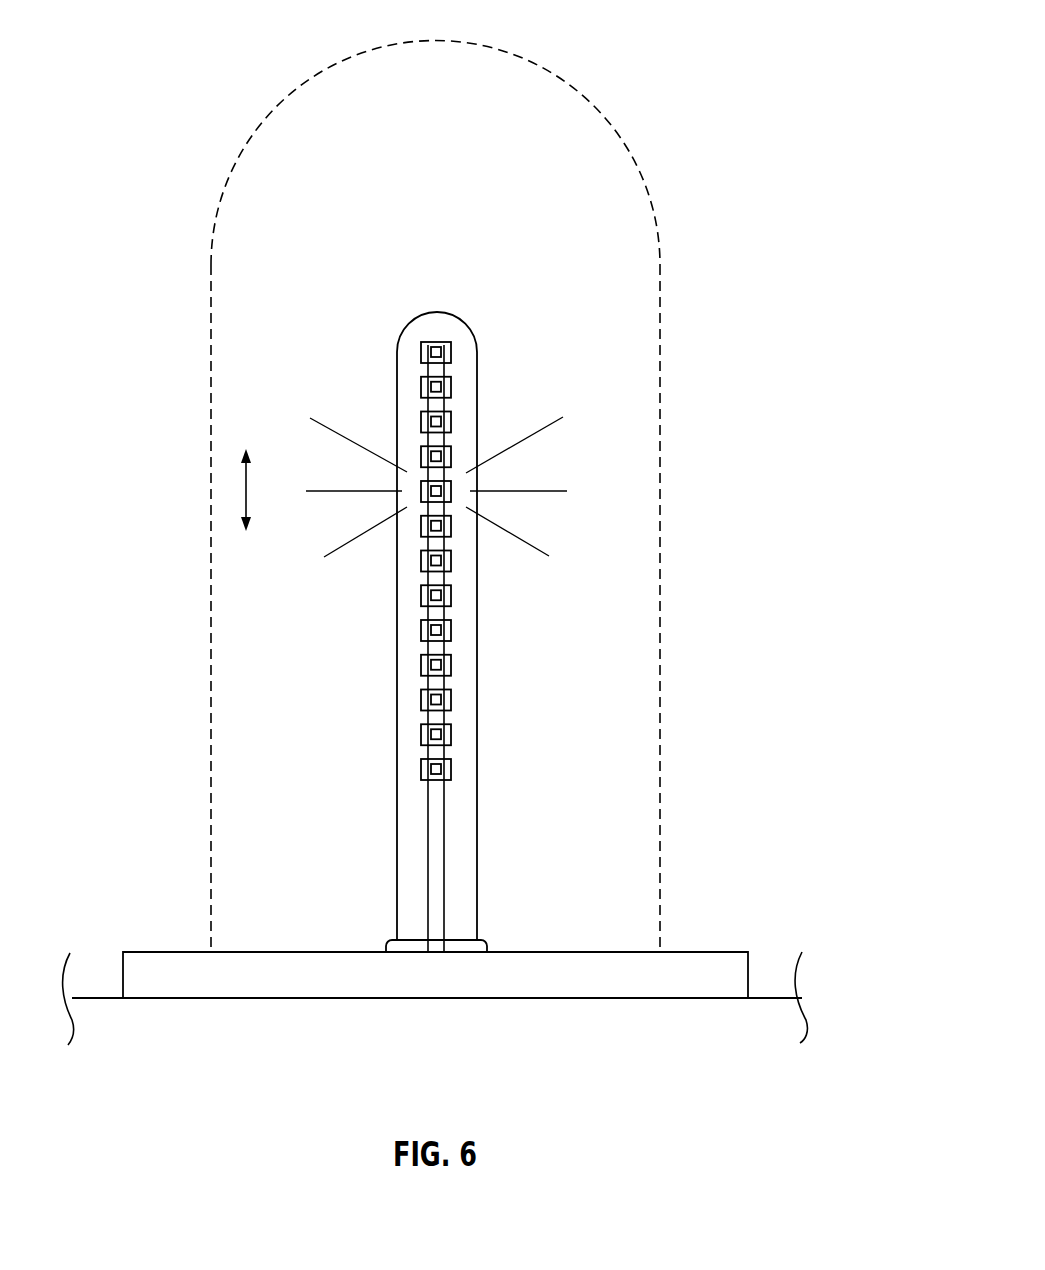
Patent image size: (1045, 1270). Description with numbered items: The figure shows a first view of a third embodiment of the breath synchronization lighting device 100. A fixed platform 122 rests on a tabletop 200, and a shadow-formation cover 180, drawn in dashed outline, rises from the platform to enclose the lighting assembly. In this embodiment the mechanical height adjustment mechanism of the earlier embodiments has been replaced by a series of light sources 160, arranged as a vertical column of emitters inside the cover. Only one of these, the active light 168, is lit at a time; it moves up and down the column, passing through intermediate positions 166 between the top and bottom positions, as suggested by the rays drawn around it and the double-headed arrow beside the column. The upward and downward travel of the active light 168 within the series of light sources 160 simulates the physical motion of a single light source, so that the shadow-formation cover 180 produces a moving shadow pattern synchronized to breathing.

The breath synchronization lighting device 100 is at (690, 86).
The fixed platform 122 is at (166, 968).
The series of light sources 160 is at (452, 718).
The intermediate positions 166 is at (576, 459).
The active light 168 is at (434, 493).
The shadow-formation cover 180 is at (660, 655).
The tabletop 200 is at (93, 1000).